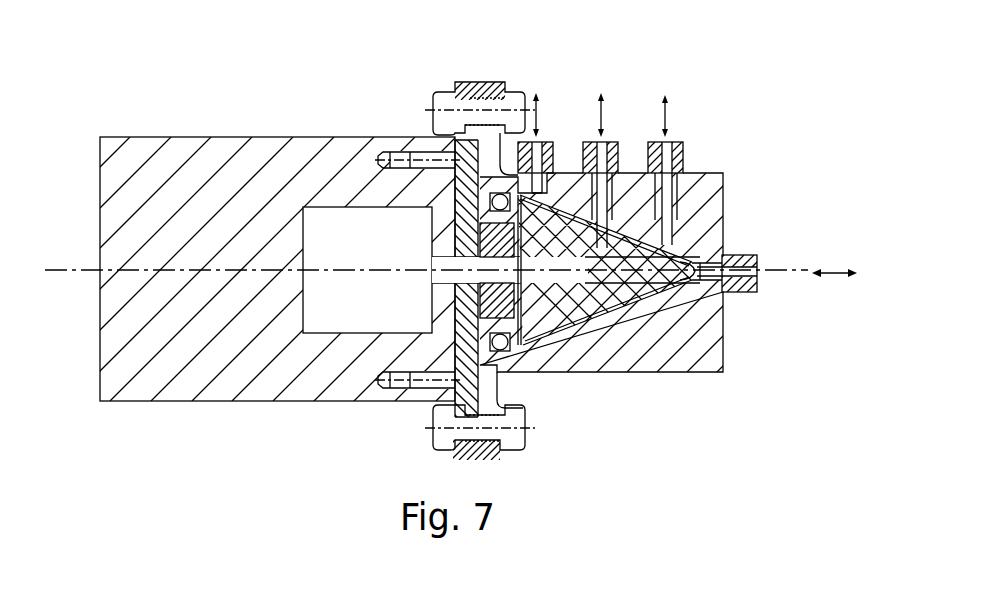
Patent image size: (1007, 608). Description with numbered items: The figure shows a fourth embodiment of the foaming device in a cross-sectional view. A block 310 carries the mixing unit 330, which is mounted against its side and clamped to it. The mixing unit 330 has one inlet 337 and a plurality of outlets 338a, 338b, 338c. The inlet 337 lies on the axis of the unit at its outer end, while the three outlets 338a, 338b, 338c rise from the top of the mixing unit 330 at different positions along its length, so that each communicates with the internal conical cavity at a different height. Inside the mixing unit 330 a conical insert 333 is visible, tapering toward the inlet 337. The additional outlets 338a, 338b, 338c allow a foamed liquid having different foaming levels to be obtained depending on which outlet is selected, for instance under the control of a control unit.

The mounting block 310 is at (179, 86).
The mixing unit 330 is at (749, 90).
The conical nozzle insert 333 is at (697, 258).
The inlet 337 is at (715, 273).
The outlet 338a is at (555, 162).
The outlet 338b is at (620, 165).
The outlet 338c is at (686, 165).